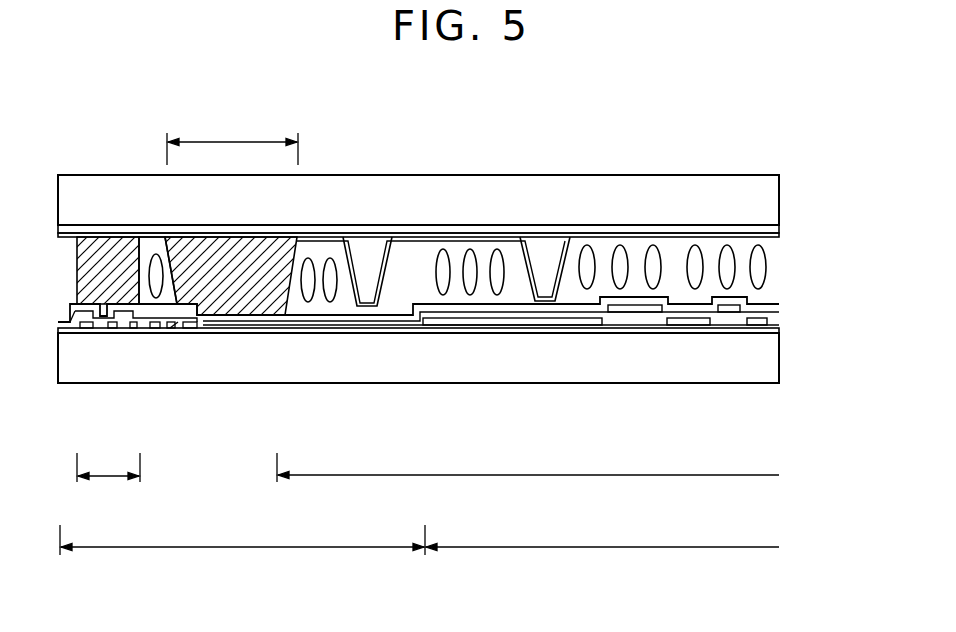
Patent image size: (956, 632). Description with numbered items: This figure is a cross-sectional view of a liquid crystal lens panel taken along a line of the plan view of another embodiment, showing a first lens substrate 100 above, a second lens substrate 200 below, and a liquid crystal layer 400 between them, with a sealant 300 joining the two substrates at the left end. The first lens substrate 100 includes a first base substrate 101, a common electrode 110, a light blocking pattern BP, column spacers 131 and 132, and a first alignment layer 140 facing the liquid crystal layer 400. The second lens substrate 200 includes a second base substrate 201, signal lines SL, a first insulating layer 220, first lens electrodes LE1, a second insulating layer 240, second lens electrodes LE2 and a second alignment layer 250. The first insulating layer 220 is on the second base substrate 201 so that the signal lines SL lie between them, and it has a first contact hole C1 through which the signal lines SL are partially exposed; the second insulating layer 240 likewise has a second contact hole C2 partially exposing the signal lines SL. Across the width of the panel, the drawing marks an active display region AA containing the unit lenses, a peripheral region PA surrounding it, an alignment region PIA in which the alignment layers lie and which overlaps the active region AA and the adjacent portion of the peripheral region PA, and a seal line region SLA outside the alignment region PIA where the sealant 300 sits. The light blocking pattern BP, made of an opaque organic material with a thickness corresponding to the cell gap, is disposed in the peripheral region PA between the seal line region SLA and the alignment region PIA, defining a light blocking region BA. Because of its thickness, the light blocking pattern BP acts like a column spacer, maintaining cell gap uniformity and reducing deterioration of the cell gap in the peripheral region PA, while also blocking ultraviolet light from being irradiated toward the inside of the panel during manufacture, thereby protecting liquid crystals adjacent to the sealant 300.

The first lens substrate 100 is at (52, 175).
The first base substrate 101 is at (779, 200).
The common electrode 110 is at (779, 228).
The first alignment layer 140 is at (779, 237).
The liquid crystal layer 400 is at (779, 277).
The sealant 300 is at (97, 250).
The light blocking region BA is at (232, 143).
The light blocking pattern BP is at (243, 298).
The column spacer 132 is at (362, 250).
The column spacer 131 is at (542, 250).
The second lens substrate 200 is at (52, 305).
The second alignment layer 250 is at (779, 305).
The second insulating layer 240 is at (779, 322).
The first insulating layer 220 is at (779, 330).
The second base substrate 201 is at (779, 370).
The first lens electrodes LE1 is at (528, 326).
The second lens electrodes LE2 is at (652, 313).
The signal lines SL is at (105, 330).
The first contact hole C1 is at (173, 330).
The second contact hole C2 is at (77, 326).
The seal line region SLA is at (108, 482).
The alignment region PIA is at (528, 482).
The peripheral region PA is at (242, 553).
The active display region AA is at (602, 563).